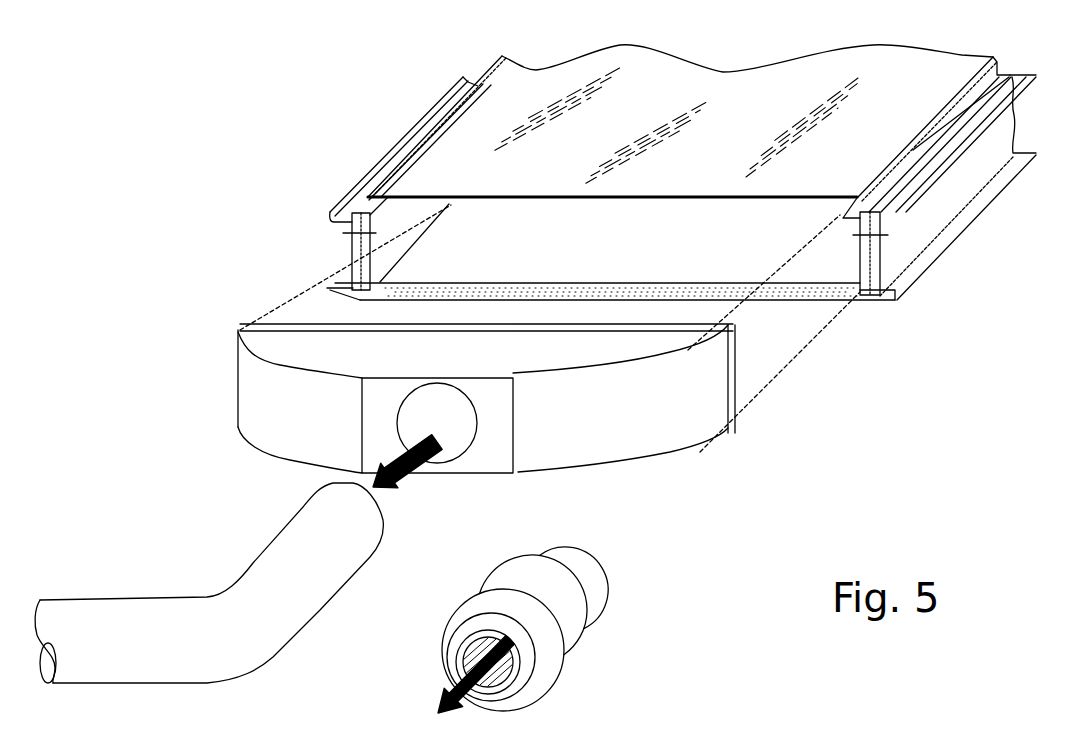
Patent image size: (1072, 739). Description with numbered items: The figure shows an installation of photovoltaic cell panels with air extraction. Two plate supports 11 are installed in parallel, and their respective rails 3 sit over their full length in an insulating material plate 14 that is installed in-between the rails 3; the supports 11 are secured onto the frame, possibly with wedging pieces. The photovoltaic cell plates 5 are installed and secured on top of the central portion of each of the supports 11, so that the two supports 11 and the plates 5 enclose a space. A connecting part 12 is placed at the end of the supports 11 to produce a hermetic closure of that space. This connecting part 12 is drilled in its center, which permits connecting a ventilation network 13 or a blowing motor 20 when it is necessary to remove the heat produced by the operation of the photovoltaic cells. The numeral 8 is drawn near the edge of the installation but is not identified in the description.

The photovoltaic cell plate 5 is at (708, 101).
The plate support 11 is at (347, 260).
The frame edge 8 is at (350, 283).
The rail 3 is at (898, 292).
The insulating material plate 14 is at (820, 292).
The connecting part 12 is at (702, 418).
The ventilation network 13 is at (320, 602).
The blowing motor 20 is at (583, 658).